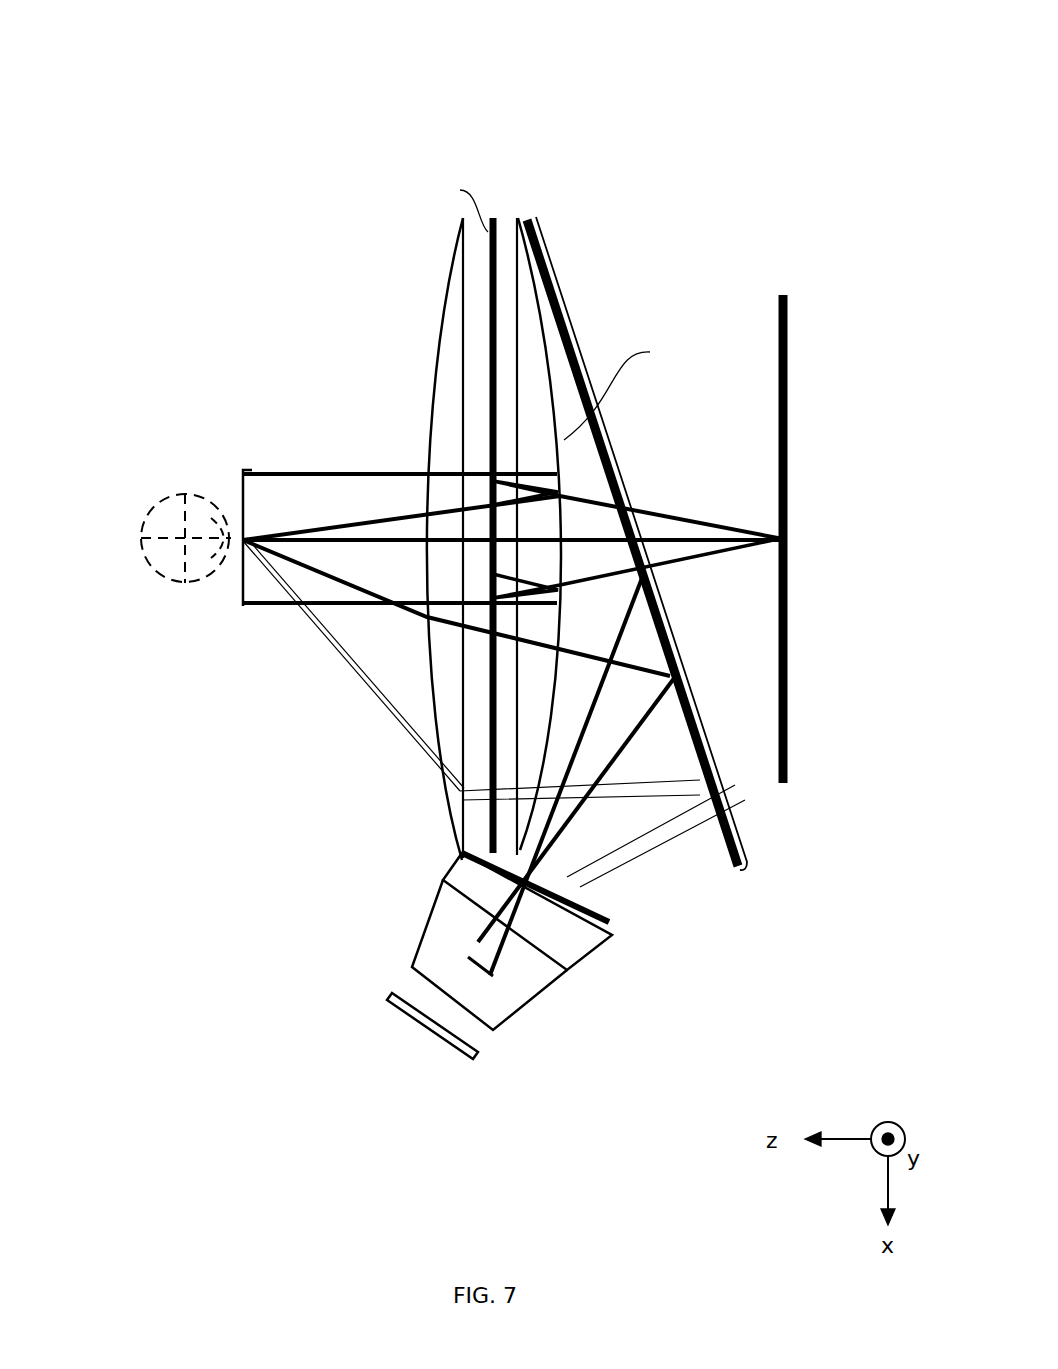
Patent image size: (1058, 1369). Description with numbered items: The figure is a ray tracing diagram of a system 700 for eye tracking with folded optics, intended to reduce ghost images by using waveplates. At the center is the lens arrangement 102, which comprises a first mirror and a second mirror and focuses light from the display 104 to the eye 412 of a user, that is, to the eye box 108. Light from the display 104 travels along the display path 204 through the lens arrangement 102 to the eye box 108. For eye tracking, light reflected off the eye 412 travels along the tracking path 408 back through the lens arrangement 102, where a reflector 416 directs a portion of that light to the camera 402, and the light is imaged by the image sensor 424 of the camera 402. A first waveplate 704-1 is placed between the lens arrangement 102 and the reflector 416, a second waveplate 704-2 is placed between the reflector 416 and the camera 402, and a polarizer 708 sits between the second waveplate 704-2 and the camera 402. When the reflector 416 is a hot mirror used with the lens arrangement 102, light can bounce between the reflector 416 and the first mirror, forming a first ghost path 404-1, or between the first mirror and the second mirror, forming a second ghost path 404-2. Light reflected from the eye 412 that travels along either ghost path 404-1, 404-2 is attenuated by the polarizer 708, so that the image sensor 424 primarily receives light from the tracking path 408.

The system 700 is at (826, 82).
The lens arrangement 102 is at (525, 292).
The display 104 is at (788, 378).
The eye box 108 is at (244, 605).
The display path 204 is at (640, 512).
The camera 402 is at (506, 990).
The first ghost path 404-1 is at (406, 512).
The second ghost path 404-2 is at (318, 628).
The tracking path 408 is at (622, 760).
The eye 412 is at (166, 512).
The reflector 416 is at (564, 308).
The image sensor 424 is at (467, 958).
The first waveplate 704-1 is at (750, 866).
The second waveplate 704-2 is at (612, 921).
The polarizer 708 is at (604, 942).